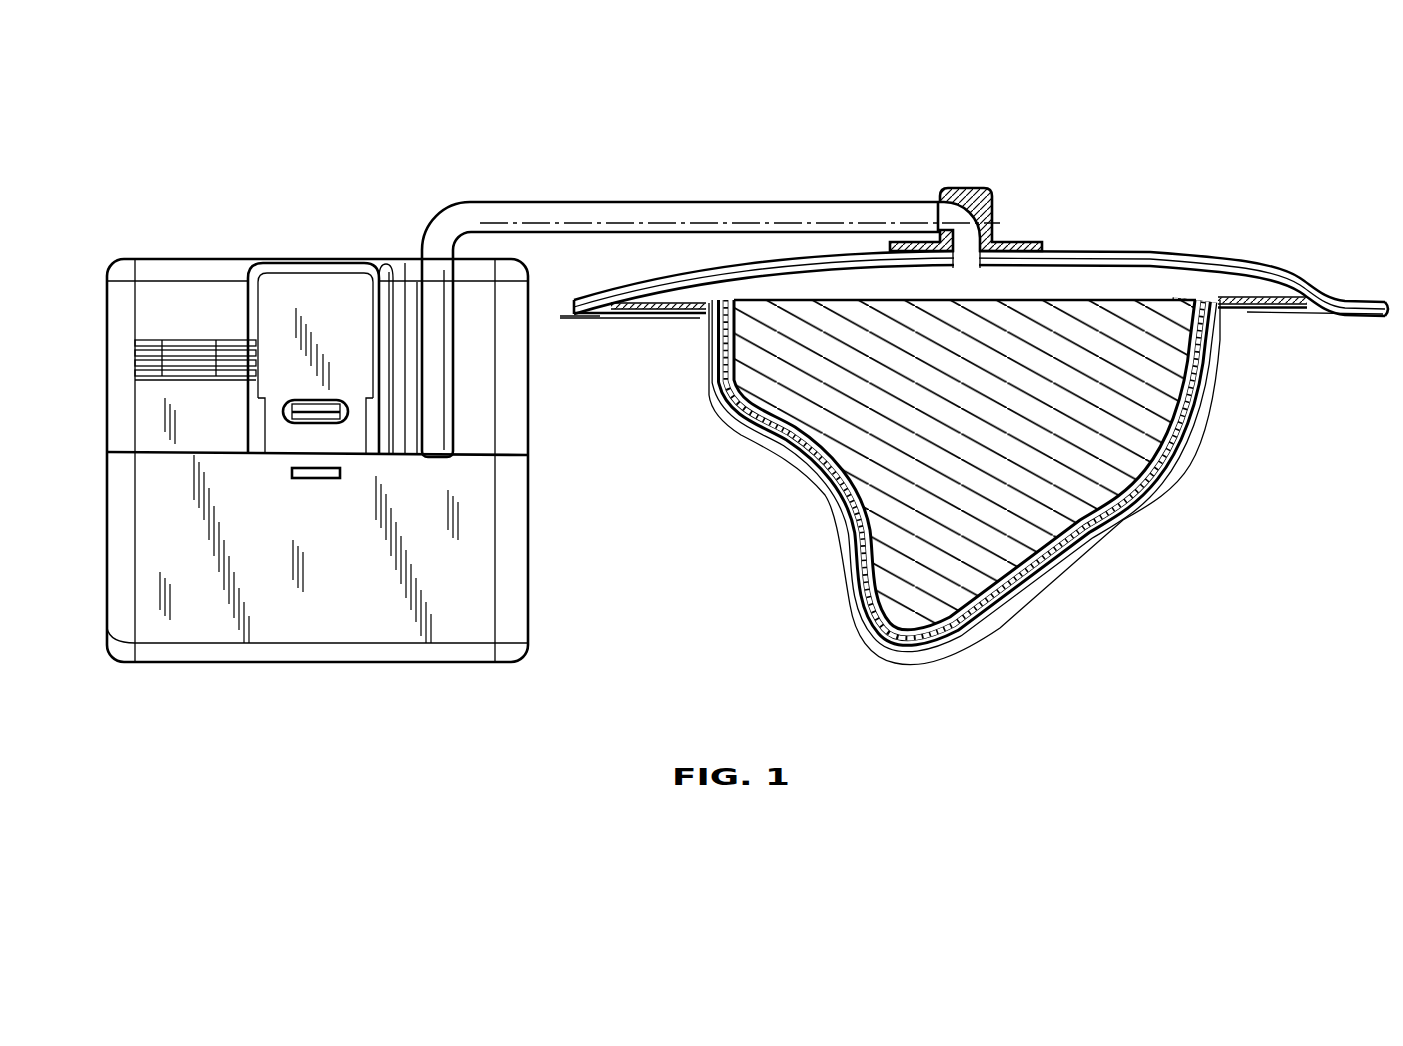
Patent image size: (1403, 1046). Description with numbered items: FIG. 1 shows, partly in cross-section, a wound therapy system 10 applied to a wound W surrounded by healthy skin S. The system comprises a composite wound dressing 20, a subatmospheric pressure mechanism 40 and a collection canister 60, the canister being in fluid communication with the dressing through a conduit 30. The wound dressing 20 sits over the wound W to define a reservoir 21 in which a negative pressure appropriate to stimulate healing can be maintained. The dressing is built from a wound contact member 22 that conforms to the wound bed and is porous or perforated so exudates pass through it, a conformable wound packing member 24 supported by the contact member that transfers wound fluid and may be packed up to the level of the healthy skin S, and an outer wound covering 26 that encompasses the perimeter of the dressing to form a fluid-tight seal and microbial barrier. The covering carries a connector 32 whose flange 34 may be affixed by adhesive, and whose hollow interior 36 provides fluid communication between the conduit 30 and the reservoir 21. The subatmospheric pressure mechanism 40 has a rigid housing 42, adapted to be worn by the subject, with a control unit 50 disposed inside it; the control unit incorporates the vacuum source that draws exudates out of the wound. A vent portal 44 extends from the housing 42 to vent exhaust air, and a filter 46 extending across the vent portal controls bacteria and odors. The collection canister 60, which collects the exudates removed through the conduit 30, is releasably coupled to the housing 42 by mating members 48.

The wound therapy system 10 is at (973, 82).
The composite wound dressing 20 is at (1099, 162).
The reservoir 21 is at (1150, 283).
The wound contact member 22 is at (1204, 390).
The wound packing member 24 is at (1102, 486).
The wound covering 26 is at (1065, 250).
The conduit 30 is at (700, 200).
The connector 32 is at (977, 187).
The flange 34 is at (1012, 242).
The hollow interior 36 is at (973, 260).
The subatmospheric pressure mechanism 40 is at (124, 214).
The housing 42 is at (117, 409).
The vent portal 44 is at (135, 344).
The filter 46 is at (135, 357).
The mating members 48 is at (291, 421).
The control unit 50 is at (107, 286).
The collection canister 60 is at (122, 565).
The healthy skin S is at (612, 314).
The wound W is at (770, 447).